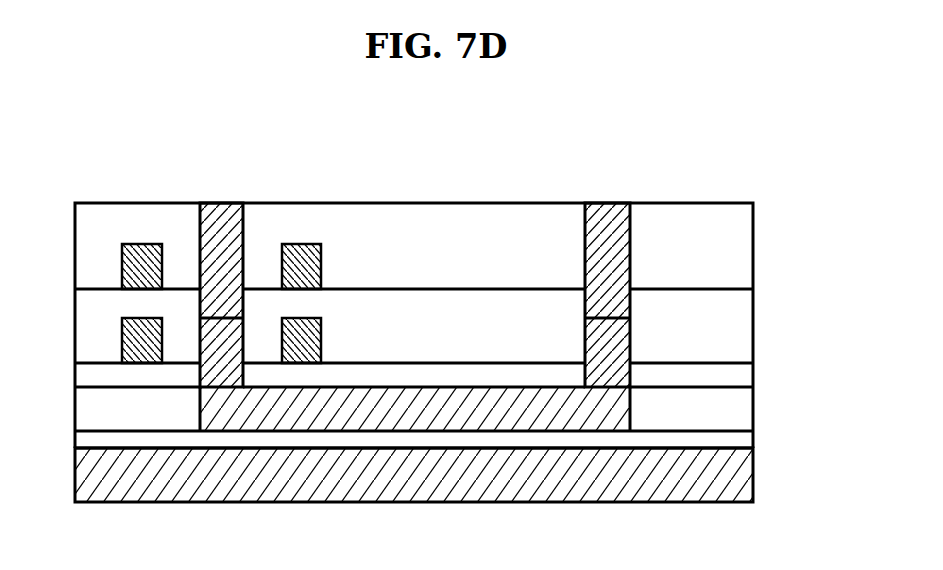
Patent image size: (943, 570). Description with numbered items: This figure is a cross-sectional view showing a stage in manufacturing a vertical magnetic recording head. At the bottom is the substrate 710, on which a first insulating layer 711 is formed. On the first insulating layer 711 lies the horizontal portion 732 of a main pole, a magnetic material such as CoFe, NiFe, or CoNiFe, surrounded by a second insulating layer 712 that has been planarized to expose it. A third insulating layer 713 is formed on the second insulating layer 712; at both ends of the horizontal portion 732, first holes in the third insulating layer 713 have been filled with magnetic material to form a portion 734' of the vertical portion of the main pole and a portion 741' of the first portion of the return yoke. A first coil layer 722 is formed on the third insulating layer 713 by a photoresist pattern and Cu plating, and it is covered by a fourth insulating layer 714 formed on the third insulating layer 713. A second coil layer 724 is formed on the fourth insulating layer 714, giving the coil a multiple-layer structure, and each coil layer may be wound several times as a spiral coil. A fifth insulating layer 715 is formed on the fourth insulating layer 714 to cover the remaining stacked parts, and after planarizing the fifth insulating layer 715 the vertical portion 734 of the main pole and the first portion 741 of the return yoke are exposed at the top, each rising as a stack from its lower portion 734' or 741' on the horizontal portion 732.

The substrate 710 is at (750, 477).
The first insulating layer 711 is at (748, 440).
The second insulating layer 712 is at (743, 402).
The third insulating layer 713 is at (742, 375).
The fourth insulating layer 714 is at (740, 326).
The fifth insulating layer 715 is at (733, 251).
The first coil layer 722 is at (143, 350).
The second coil layer 724 is at (135, 260).
The horizontal portion of the main pole 732 is at (539, 418).
The vertical portion of the main pole 734 is at (205, 251).
The portion of the vertical portion of the main pole 734' is at (212, 431).
The first portion of the return yoke 741 is at (613, 245).
The portion of the first portion of the return yoke 741' is at (610, 431).